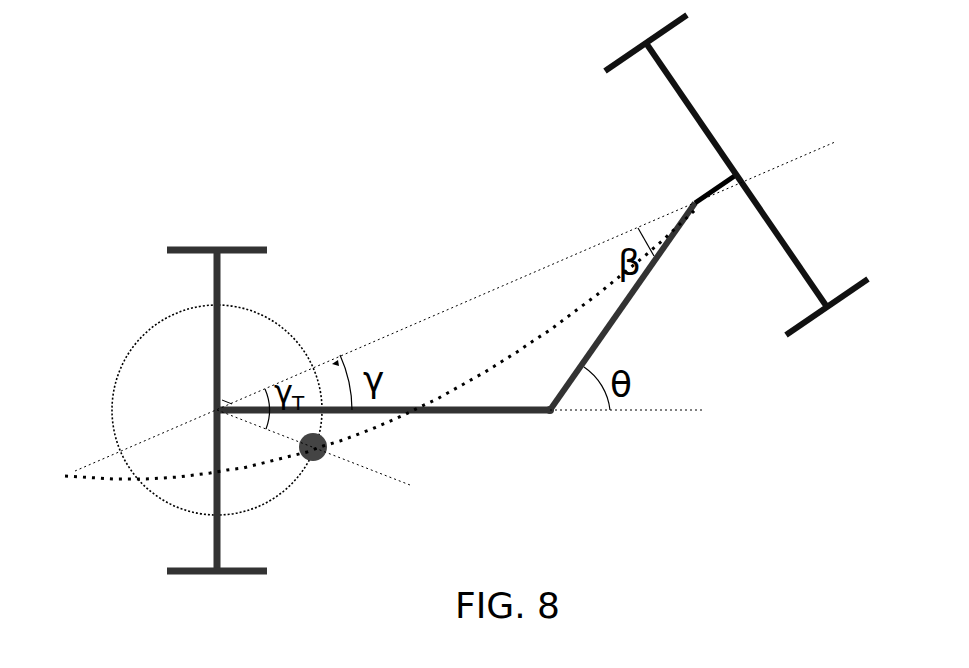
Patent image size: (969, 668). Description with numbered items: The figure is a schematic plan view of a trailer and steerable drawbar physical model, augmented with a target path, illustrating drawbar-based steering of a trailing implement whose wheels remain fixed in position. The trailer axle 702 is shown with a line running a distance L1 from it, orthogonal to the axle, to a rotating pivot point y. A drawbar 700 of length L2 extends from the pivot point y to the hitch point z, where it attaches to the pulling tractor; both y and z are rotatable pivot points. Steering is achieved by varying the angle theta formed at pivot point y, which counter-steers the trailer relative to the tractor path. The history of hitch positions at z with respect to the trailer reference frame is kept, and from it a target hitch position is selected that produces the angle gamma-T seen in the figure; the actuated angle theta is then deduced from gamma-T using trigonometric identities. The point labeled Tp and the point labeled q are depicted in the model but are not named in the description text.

The drawbar 700 is at (709, 212).
The axle 702 is at (215, 333).
The distance L1 is at (383, 434).
The distance L2 is at (622, 306).
The pivot point y is at (558, 433).
The hitch point z is at (686, 186).
The trailer pivot point Tp is at (324, 473).
The wheel center q is at (176, 379).